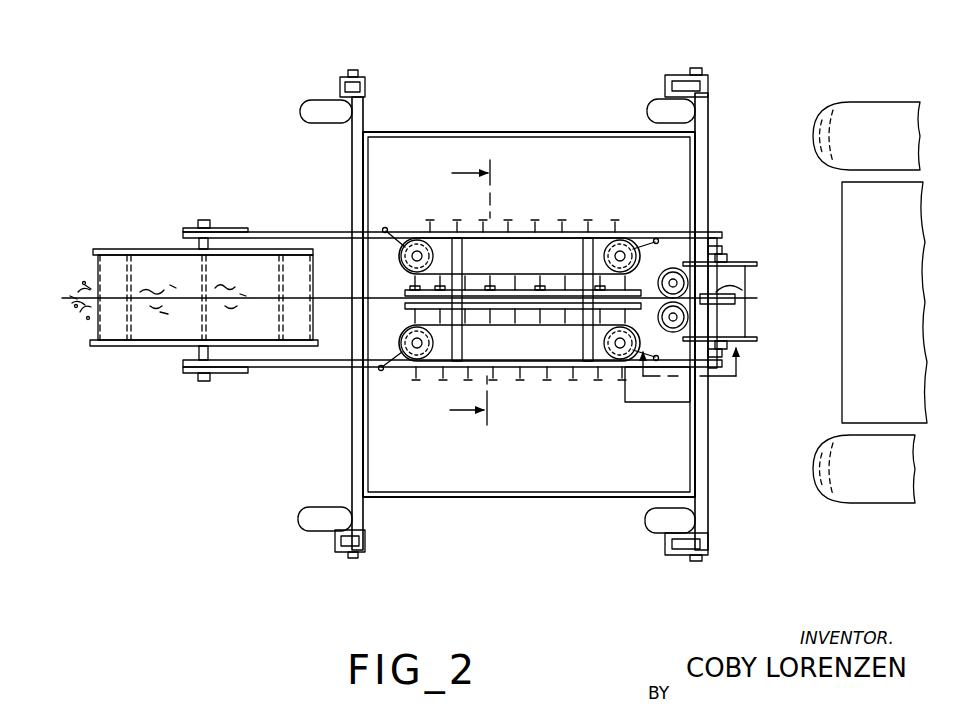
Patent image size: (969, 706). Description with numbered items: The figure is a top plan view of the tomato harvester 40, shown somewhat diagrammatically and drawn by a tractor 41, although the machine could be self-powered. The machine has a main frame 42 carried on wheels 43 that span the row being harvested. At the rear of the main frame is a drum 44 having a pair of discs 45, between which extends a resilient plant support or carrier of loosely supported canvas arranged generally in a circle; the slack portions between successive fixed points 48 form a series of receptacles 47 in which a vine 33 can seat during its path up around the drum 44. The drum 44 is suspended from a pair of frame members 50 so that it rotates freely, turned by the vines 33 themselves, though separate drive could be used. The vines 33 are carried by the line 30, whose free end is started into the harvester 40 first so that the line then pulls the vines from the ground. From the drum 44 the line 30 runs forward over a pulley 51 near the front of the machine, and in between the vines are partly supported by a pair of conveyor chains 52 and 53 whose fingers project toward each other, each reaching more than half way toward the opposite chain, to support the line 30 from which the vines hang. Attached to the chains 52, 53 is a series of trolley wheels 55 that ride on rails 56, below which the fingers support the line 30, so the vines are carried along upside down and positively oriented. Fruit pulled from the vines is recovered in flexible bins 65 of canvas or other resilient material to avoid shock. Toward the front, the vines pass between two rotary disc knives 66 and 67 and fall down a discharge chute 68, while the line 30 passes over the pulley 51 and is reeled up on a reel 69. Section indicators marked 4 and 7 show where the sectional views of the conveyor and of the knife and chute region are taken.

The line 30 is at (339, 298).
The vine 33 is at (92, 280).
The harvester 40 is at (547, 131).
The tractor 41 is at (845, 396).
The main frame 42 is at (352, 183).
The wheels 43 is at (303, 113).
The drum 44 is at (146, 362).
The discs 45 is at (119, 247).
The receptacles 47 is at (175, 329).
The fixed points 48 is at (205, 278).
The frame members 50 is at (290, 231).
The pulley 51 is at (745, 299).
The conveyor chain 52 is at (572, 380).
The conveyor chain 53 is at (585, 240).
The trolley wheels 55 is at (482, 224).
The rails 56 is at (510, 291).
The flexible bins 65 is at (459, 152).
The rotary disc knife 66 is at (669, 268).
The rotary disc knife 67 is at (669, 326).
The discharge chute 68 is at (647, 408).
The reel 69 is at (745, 274).
The section line 4- 4 is at (456, 290).
The section line 7- 7 is at (673, 386).